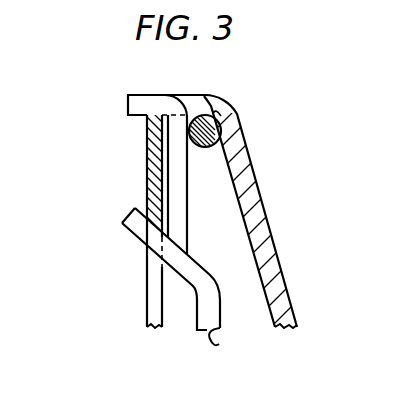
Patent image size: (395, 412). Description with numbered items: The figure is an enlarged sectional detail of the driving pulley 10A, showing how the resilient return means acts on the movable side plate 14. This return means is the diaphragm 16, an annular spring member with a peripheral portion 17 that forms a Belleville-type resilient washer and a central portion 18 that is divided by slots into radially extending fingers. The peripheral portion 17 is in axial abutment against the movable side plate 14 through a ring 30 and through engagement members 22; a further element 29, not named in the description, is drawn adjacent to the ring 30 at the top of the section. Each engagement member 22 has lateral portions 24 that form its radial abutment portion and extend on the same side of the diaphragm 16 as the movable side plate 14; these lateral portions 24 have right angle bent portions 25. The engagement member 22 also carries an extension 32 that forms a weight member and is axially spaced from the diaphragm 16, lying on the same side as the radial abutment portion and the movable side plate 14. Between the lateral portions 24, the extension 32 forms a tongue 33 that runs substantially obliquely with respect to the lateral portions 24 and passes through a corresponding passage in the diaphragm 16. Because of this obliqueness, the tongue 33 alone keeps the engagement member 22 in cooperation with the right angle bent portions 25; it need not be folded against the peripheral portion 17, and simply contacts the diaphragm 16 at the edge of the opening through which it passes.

The driving pulley 10A is at (253, 159).
The movable side plate 14 is at (293, 299).
The diaphragm 16 is at (146, 275).
The peripheral portion 17 is at (147, 147).
The central portion 18 is at (150, 320).
The engagement member 22 is at (212, 266).
The lateral portions 24 is at (175, 179).
The right angle bent portions 25 is at (135, 99).
The bead 29 is at (212, 103).
The ring 30 is at (213, 113).
The extension 32 is at (216, 338).
The tongue 33 is at (126, 223).